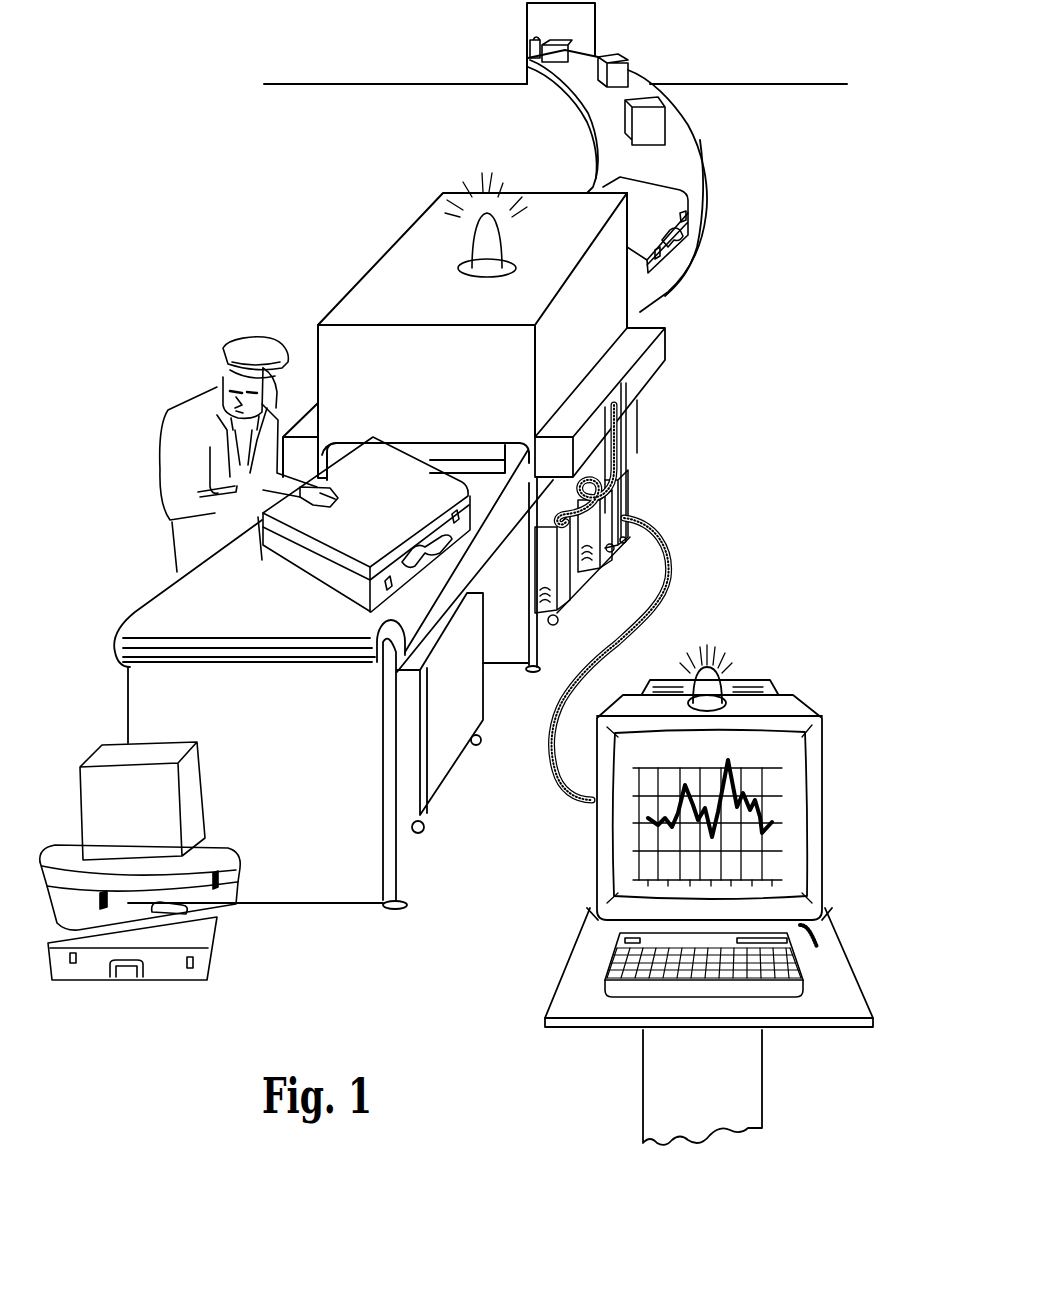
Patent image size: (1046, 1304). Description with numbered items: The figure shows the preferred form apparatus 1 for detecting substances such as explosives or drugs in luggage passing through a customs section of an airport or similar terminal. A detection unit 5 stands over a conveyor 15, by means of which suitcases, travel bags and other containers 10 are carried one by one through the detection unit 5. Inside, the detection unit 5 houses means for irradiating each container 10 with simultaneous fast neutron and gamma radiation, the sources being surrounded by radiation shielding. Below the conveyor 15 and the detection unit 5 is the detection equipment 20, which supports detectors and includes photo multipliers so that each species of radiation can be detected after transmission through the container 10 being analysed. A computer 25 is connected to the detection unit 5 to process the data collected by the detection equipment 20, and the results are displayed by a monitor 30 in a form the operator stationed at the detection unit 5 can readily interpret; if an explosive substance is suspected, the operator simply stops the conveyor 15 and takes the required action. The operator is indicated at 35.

The apparatus 1 is at (314, 253).
The detection unit 5 is at (680, 350).
The containers 10 is at (623, 70).
The conveyor 15 is at (692, 155).
The detection equipment 20 is at (605, 512).
The computer 25 is at (640, 908).
The monitor 30 is at (773, 762).
The operator 35 is at (193, 420).